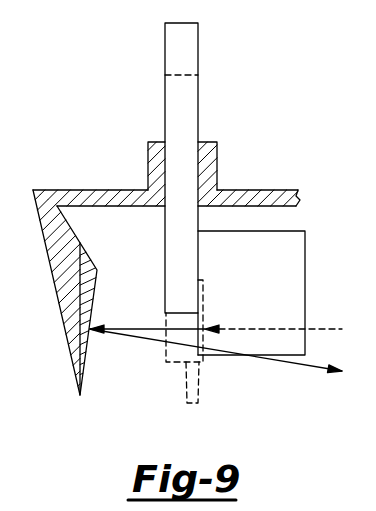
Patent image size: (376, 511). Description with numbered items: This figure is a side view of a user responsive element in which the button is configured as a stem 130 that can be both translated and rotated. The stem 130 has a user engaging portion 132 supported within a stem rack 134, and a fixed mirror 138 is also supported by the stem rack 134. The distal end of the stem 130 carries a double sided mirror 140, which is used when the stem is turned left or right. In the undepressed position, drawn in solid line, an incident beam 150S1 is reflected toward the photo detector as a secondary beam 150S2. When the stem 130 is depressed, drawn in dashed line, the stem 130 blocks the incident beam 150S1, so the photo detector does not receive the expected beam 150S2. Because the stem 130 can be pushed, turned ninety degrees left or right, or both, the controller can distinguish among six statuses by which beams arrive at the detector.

The stem 130 is at (188, 162).
The user engaging portion 132 is at (192, 49).
The stem rack 134 is at (75, 190).
The fixed mirror 138 is at (88, 355).
The double sided mirror 140 is at (203, 291).
The incident beam 150S1 is at (324, 329).
The secondary beam 150S2 is at (307, 368).